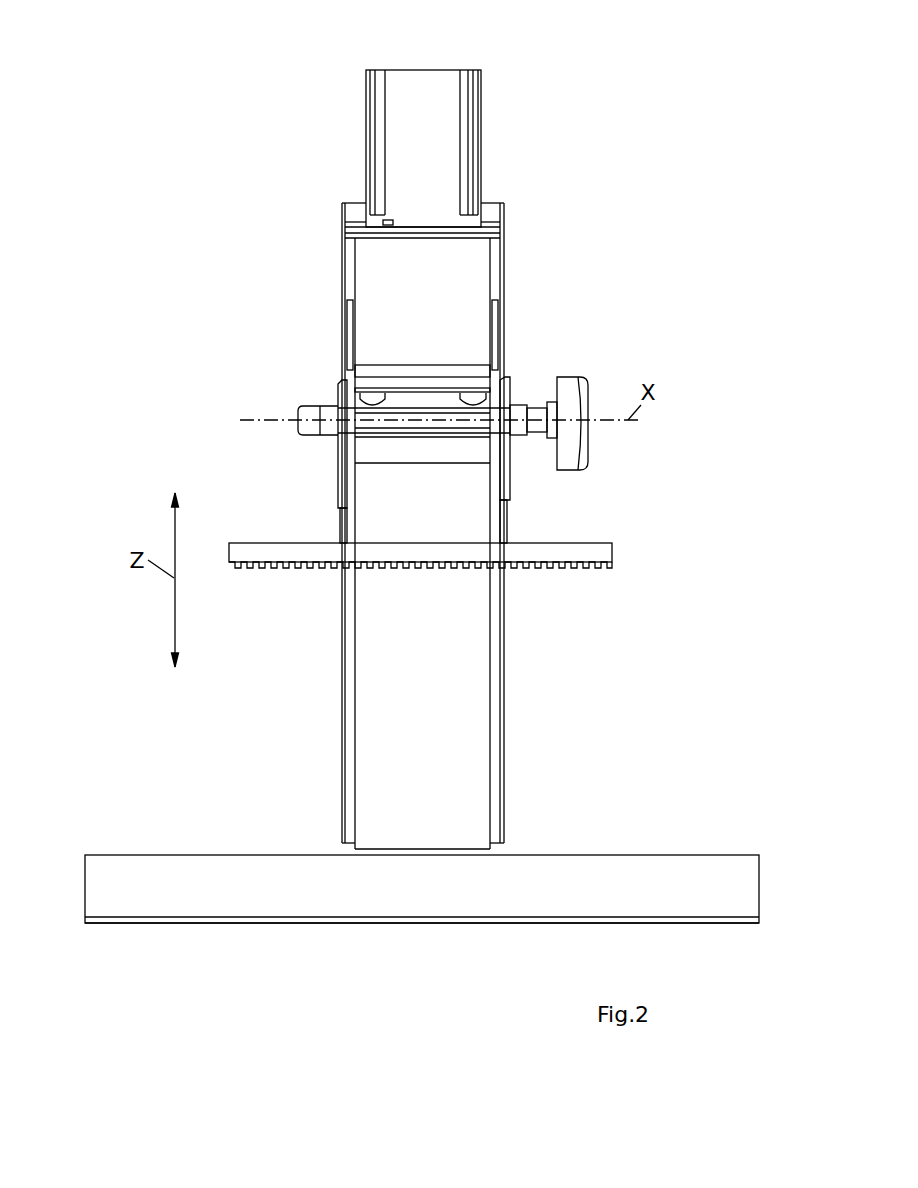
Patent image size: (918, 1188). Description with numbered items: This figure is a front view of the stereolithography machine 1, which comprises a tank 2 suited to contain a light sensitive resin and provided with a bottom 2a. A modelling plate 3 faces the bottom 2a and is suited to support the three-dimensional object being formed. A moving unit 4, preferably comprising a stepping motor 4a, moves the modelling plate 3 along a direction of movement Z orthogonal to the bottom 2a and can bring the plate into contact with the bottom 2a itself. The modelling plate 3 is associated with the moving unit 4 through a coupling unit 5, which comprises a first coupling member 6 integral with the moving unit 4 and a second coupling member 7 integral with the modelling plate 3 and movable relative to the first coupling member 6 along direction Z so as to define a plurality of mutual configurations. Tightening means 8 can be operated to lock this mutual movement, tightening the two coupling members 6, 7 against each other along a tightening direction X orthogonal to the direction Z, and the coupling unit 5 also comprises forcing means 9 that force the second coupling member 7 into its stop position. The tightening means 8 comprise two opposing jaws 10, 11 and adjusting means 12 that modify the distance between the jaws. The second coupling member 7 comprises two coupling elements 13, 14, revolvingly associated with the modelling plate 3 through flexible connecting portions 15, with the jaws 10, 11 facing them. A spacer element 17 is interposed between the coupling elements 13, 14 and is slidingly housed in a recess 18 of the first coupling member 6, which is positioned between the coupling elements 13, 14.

The stereolithography machine 1 is at (210, 103).
The tank 2 is at (700, 878).
The bottom 2a is at (697, 922).
The modelling plate 3 is at (596, 560).
The moving unit 4 is at (522, 240).
The stepping motor 4a is at (432, 127).
The coupling unit 5 is at (598, 385).
The first coupling member 6 is at (347, 330).
The second coupling member 7 is at (372, 425).
The tightening means 8 is at (535, 396).
The forcing means 9 is at (366, 395).
The jaw 10 is at (306, 415).
The jaw 11 is at (538, 420).
The adjusting means 12 is at (572, 453).
The coupling element 13 is at (340, 393).
The coupling element 14 is at (527, 398).
The connecting portions 15 is at (343, 520).
The spacer element 17 is at (418, 416).
The recess 18 is at (438, 388).